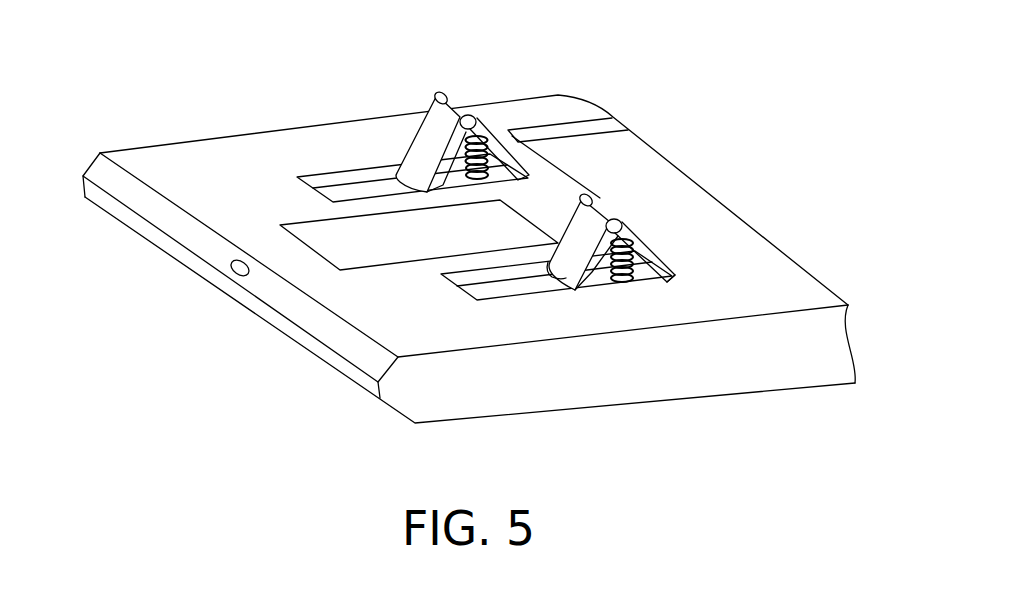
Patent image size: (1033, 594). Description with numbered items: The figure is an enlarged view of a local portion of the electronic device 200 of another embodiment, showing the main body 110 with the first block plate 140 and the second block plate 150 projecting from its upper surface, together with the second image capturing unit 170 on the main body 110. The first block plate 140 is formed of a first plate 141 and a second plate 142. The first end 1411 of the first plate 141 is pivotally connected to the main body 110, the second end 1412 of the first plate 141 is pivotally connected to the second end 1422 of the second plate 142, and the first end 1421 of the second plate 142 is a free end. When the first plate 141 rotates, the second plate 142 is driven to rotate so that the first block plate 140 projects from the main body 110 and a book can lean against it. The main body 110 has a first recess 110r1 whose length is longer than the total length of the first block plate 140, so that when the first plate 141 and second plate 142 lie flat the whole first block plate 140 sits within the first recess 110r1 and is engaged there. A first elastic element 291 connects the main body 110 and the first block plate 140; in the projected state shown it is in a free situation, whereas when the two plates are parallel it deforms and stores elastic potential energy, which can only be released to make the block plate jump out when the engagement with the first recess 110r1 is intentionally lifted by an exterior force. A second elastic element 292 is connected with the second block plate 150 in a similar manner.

The electronic device 200 is at (123, 91).
The main body 110 is at (720, 360).
The first recess 110r1 is at (497, 268).
The second image capturing unit 170 is at (233, 260).
The second block plate 150 is at (422, 138).
The second elastic element 292 is at (508, 129).
The first elastic element 291 is at (640, 250).
The first block plate 140 is at (692, 465).
The first plate 141 is at (641, 282).
The first end of the first plate 1411 is at (680, 282).
The second end of the first plate 1412 is at (600, 244).
The second plate 142 is at (612, 280).
The first end of the second plate 1421 is at (550, 270).
The second end of the second plate 1422 is at (598, 200).